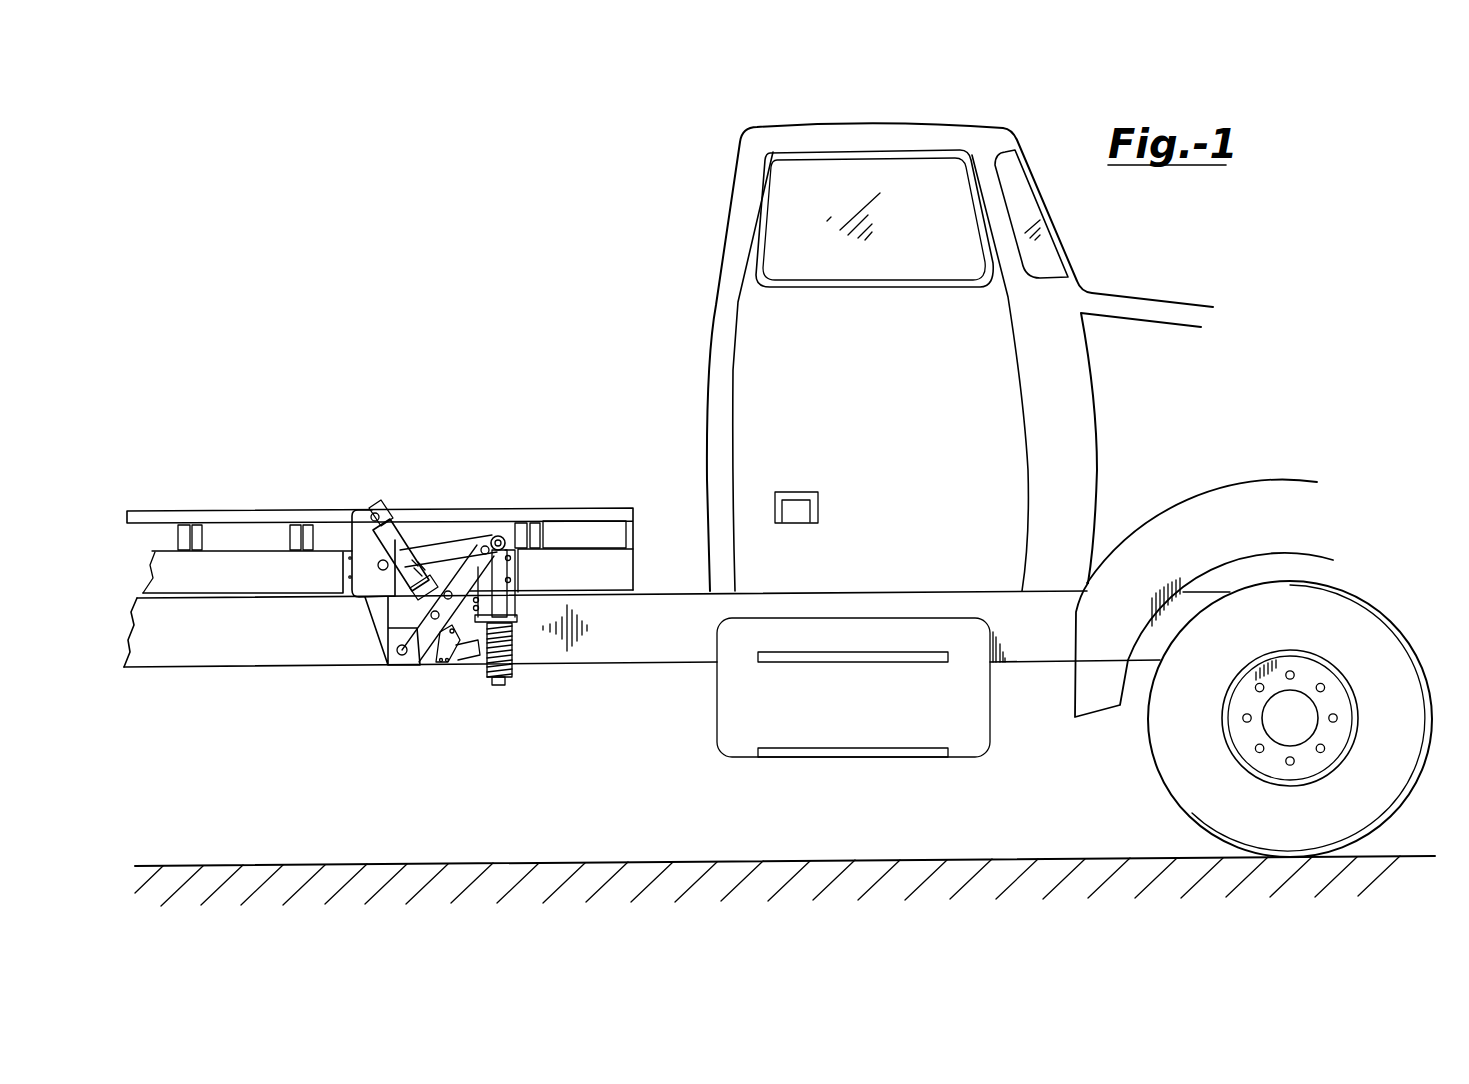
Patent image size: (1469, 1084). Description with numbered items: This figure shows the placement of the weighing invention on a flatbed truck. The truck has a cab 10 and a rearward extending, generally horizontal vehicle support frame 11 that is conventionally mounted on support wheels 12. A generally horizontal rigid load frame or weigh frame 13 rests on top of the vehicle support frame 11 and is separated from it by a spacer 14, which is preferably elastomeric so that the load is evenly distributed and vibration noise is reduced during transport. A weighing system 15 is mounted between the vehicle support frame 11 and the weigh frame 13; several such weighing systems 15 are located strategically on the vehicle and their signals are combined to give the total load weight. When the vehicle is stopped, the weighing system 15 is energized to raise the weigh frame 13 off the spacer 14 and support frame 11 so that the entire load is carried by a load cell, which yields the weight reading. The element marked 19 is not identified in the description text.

The cab 10 is at (1008, 130).
The vehicle support frame 11 is at (640, 657).
The support wheels 12 is at (1152, 758).
The load frame or weigh frame 13 is at (453, 507).
The spacer 14 is at (641, 590).
The weighing system 15 is at (440, 678).
The deck body 19 is at (145, 572).